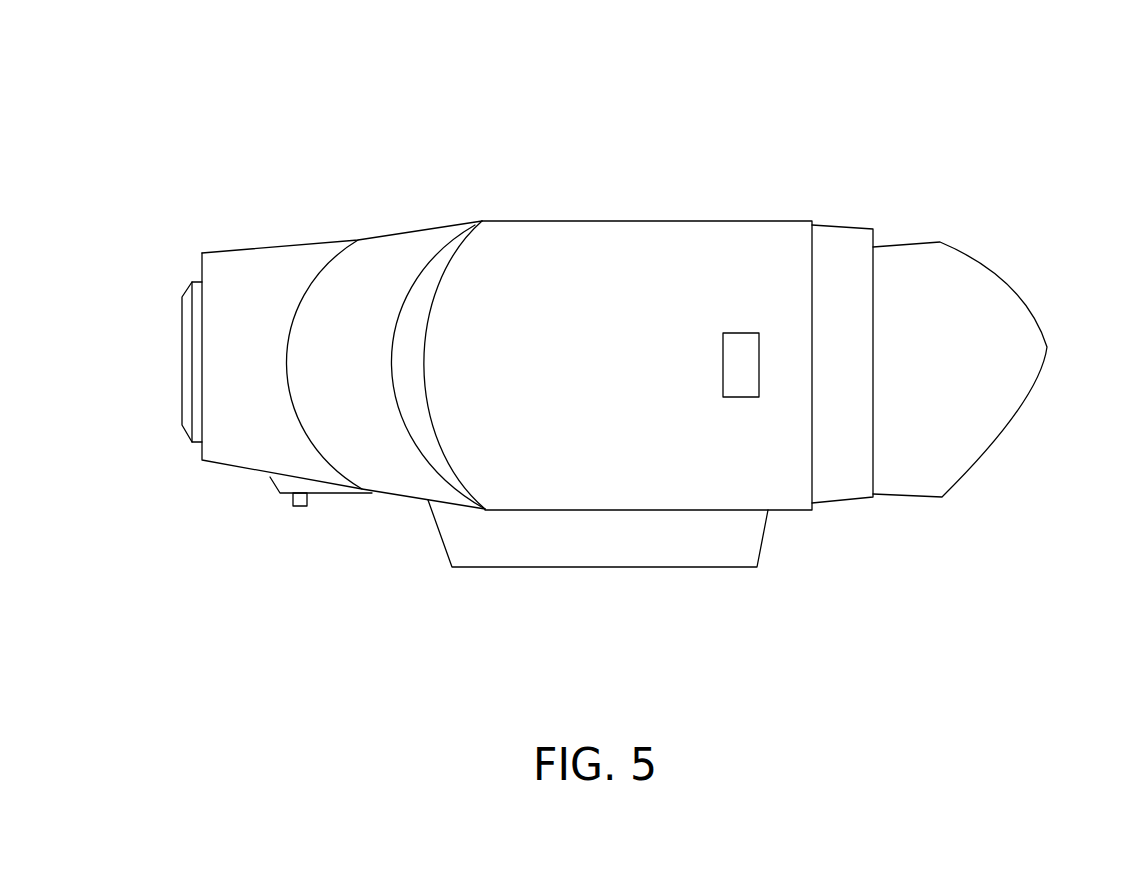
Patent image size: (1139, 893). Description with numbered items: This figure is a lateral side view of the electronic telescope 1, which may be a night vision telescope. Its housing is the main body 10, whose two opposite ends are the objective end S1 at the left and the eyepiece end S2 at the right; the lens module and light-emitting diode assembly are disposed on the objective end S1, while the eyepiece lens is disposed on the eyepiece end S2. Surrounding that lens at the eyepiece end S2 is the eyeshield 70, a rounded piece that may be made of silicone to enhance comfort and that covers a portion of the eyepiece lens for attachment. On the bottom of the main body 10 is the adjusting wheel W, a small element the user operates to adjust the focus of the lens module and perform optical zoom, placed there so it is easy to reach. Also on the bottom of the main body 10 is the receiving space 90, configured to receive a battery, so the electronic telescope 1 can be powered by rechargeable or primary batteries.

The electronic telescope 1 is at (322, 44).
The main body 10 is at (403, 480).
The eyeshield 70 is at (1023, 351).
The receiving space 90 is at (553, 550).
The adjusting wheel W is at (300, 508).
The objective end S1 is at (235, 245).
The eyepiece end S2 is at (848, 218).